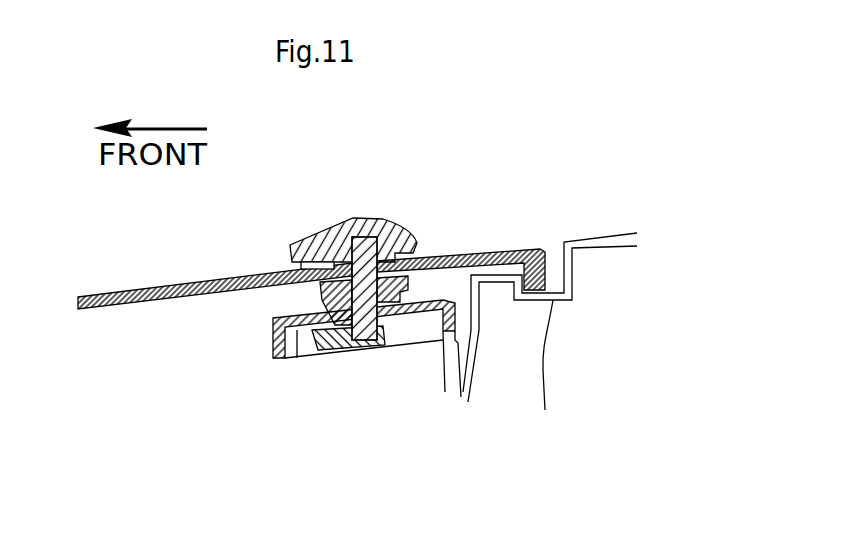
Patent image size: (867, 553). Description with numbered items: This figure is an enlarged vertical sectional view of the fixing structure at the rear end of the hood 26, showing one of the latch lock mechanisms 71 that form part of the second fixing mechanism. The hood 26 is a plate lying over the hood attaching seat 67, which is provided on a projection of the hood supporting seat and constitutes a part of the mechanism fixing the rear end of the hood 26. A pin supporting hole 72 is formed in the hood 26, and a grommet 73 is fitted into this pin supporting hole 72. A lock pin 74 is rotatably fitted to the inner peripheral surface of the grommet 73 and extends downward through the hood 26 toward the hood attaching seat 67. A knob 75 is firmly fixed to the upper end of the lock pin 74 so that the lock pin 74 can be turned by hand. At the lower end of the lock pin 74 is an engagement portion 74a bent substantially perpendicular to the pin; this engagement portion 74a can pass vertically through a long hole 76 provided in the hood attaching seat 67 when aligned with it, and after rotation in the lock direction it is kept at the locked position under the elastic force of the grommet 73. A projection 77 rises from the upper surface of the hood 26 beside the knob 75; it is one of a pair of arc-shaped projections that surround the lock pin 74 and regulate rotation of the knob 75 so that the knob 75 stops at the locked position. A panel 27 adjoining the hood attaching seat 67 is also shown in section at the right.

The hood 26 is at (133, 296).
The rear panel 27 is at (607, 237).
The hood attaching seat 67 is at (297, 358).
The latch lock mechanism 71 is at (400, 190).
The pin supporting hole 72 is at (430, 252).
The grommet 73 is at (330, 296).
The lock pin 74 is at (358, 236).
The engagement portion 74a is at (334, 338).
The knob 75 is at (313, 238).
The long hole 76 is at (393, 330).
The projection 77 is at (302, 263).